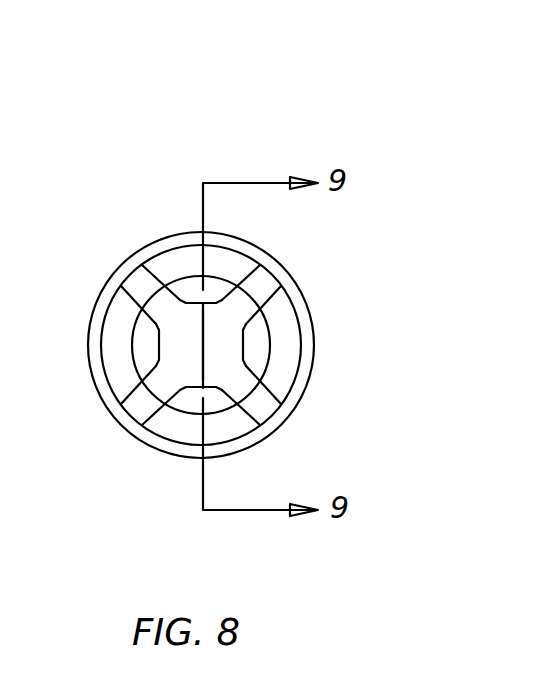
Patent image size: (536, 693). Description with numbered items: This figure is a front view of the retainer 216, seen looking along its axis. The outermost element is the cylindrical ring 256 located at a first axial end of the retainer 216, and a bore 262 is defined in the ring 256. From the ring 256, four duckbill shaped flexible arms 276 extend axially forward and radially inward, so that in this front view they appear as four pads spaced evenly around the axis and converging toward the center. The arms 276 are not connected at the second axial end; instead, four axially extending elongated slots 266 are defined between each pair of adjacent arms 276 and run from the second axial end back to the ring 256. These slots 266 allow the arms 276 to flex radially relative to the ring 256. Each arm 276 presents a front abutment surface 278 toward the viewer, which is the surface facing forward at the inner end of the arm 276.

The retainer 216 is at (338, 252).
The cylindrical ring 256 is at (160, 249).
The bore 262 is at (147, 375).
The axially extending elongated slots 266 is at (163, 302).
The duckbill shaped flexible arms 276 is at (237, 258).
The front abutment surface 278 is at (183, 348).